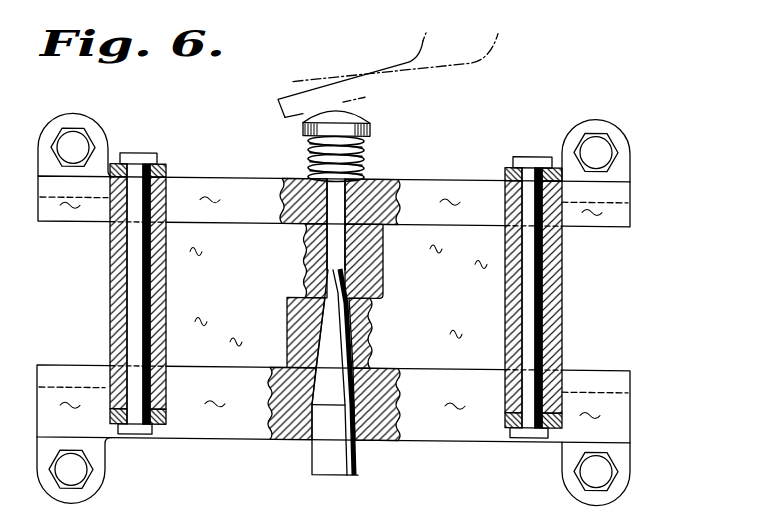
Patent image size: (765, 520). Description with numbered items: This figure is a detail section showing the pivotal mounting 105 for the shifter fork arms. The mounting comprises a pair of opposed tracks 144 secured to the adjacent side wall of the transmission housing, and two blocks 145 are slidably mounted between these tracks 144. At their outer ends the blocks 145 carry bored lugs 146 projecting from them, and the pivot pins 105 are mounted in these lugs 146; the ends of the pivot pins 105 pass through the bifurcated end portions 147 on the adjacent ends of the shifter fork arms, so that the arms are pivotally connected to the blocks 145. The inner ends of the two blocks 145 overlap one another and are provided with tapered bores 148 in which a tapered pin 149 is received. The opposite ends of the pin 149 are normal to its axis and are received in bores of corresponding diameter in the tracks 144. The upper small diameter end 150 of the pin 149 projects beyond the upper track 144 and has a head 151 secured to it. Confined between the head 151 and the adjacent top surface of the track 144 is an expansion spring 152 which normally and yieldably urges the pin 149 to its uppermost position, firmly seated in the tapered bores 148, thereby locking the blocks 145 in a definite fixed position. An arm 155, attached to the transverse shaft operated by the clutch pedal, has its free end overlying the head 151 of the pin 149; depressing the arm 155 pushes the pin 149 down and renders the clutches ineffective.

The pivot pin 105 is at (128, 262).
The track 144 is at (634, 208).
The block 145 is at (247, 322).
The bored lug 146 is at (563, 310).
The bifurcated end portion 147 is at (167, 162).
The tapered bore 148 is at (356, 270).
The tapered pin 149 is at (324, 443).
The upper small diameter end 150 is at (337, 200).
The head 151 is at (373, 123).
The expansion spring 152 is at (312, 147).
The arm 155 is at (348, 73).